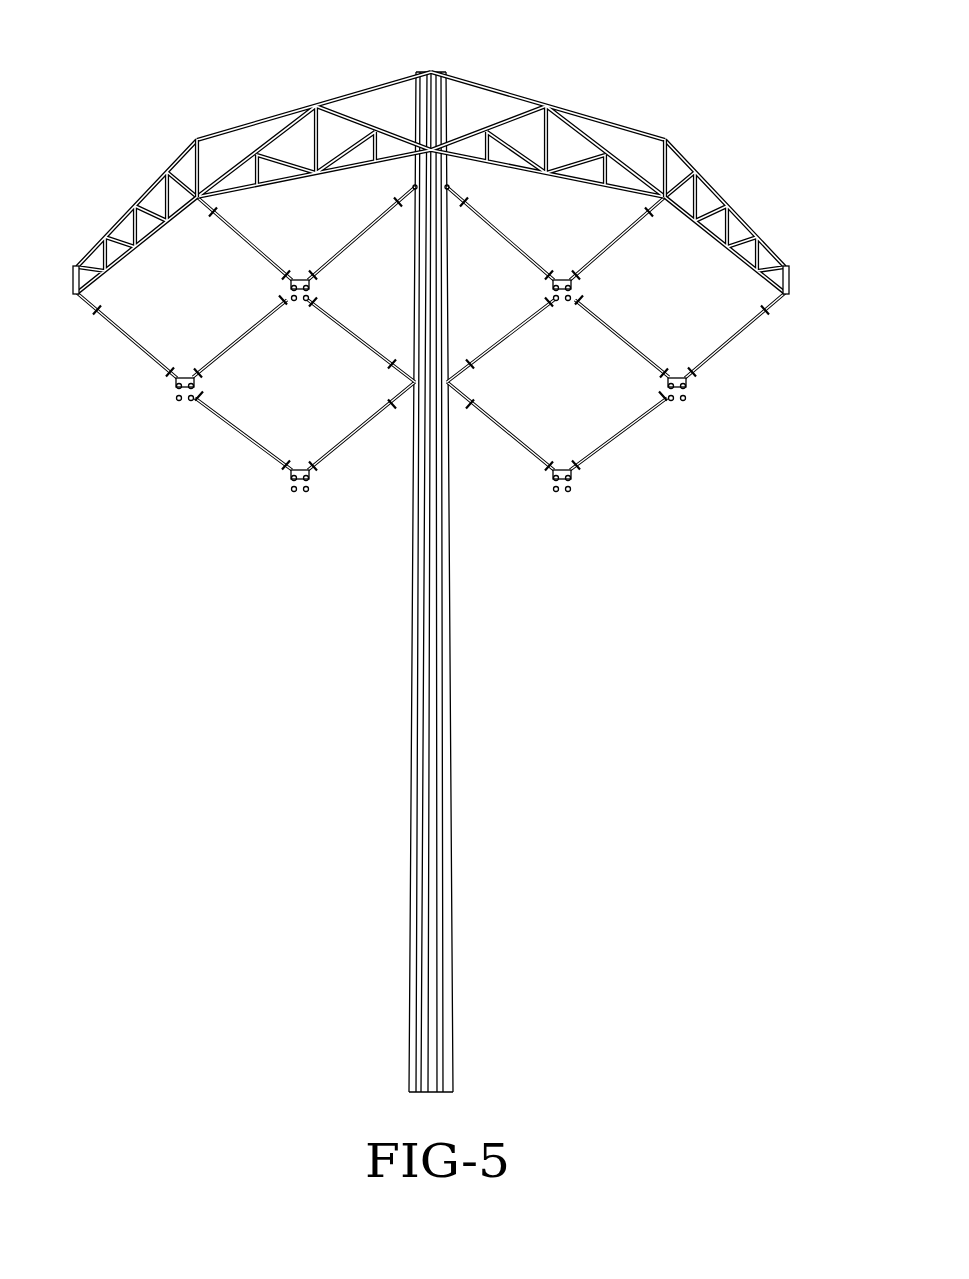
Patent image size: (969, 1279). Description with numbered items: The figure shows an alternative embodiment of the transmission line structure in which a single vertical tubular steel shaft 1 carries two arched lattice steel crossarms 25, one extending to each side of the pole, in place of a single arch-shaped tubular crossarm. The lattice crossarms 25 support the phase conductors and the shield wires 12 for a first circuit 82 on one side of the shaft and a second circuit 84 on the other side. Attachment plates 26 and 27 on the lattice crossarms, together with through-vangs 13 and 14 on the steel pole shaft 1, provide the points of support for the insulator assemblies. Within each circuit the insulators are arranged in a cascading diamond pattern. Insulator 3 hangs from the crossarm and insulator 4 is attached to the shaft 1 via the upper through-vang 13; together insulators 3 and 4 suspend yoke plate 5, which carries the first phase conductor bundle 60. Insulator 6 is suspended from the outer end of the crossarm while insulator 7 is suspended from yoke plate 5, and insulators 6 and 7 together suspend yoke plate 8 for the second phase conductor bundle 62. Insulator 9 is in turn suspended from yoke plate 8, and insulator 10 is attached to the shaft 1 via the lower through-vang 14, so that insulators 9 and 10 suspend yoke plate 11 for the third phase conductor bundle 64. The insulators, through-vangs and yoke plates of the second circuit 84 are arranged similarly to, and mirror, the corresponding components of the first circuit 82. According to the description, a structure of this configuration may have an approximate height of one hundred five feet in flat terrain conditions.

The tubular steel shaft 1 is at (432, 835).
The insulator 3 is at (599, 253).
The insulator 4 is at (517, 247).
The yoke plate 5 is at (553, 292).
The insulator 6 is at (737, 335).
The insulator 7 is at (620, 333).
The yoke plate 8 is at (685, 393).
The insulator 9 is at (619, 432).
The insulator 10 is at (510, 437).
The yoke plate 11 is at (557, 492).
The shield wires 12 is at (666, 134).
The through-vang 13 is at (446, 187).
The through-vang 14 is at (449, 381).
The arched lattice steel crossarm 25 is at (579, 113).
The attachment plate 26 is at (788, 284).
The attachment plate 27 is at (667, 172).
The first phase conductor bundle 60 is at (568, 305).
The second phase conductor bundle 62 is at (673, 404).
The third phase conductor bundle 64 is at (567, 493).
The first circuit 82 is at (217, 634).
The second circuit 84 is at (645, 634).